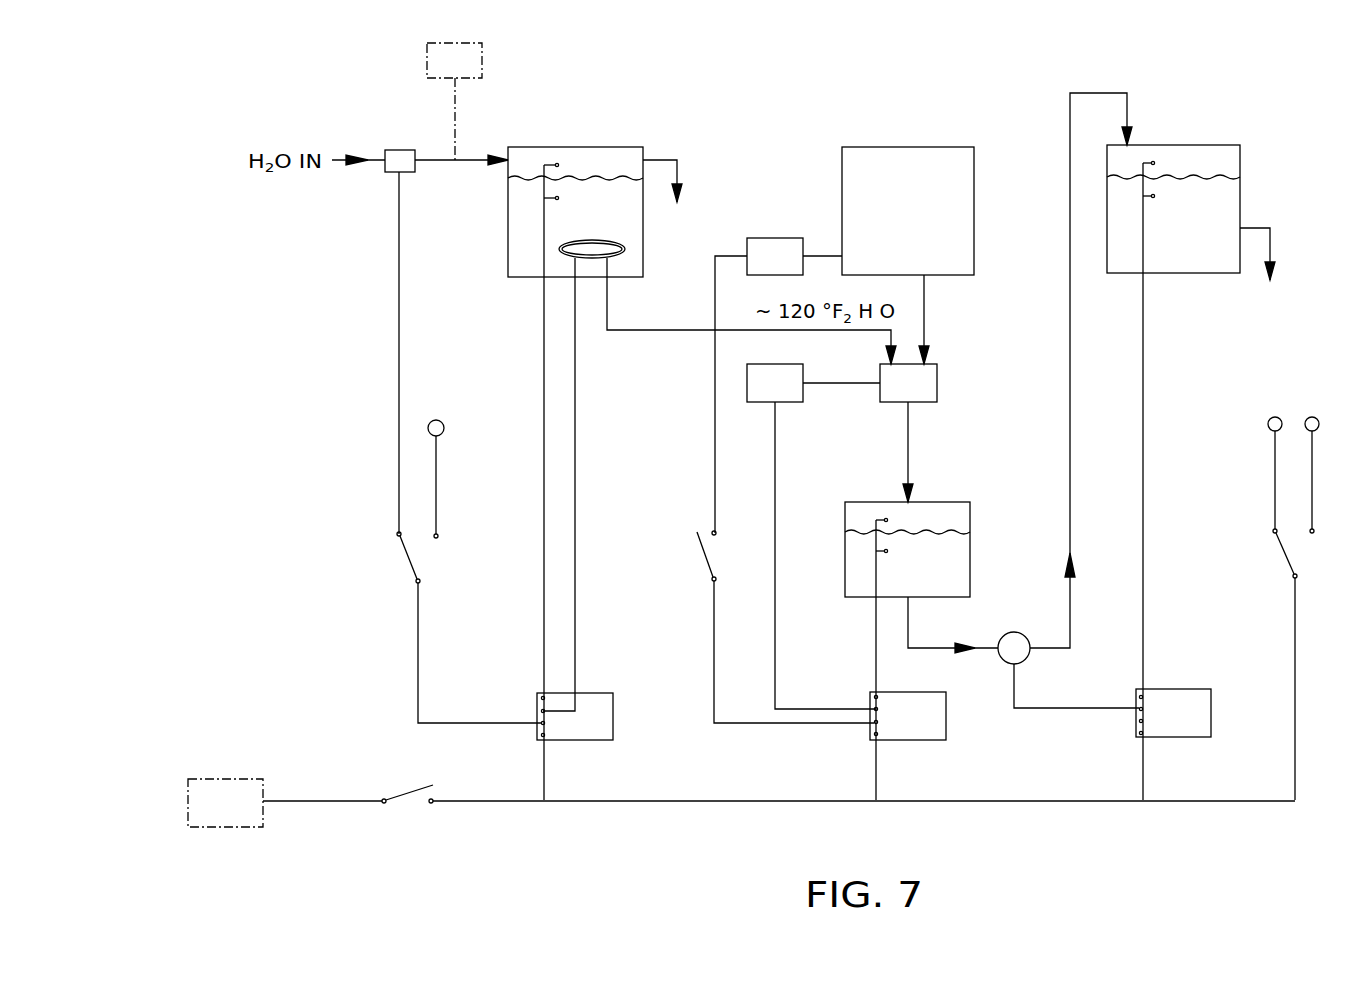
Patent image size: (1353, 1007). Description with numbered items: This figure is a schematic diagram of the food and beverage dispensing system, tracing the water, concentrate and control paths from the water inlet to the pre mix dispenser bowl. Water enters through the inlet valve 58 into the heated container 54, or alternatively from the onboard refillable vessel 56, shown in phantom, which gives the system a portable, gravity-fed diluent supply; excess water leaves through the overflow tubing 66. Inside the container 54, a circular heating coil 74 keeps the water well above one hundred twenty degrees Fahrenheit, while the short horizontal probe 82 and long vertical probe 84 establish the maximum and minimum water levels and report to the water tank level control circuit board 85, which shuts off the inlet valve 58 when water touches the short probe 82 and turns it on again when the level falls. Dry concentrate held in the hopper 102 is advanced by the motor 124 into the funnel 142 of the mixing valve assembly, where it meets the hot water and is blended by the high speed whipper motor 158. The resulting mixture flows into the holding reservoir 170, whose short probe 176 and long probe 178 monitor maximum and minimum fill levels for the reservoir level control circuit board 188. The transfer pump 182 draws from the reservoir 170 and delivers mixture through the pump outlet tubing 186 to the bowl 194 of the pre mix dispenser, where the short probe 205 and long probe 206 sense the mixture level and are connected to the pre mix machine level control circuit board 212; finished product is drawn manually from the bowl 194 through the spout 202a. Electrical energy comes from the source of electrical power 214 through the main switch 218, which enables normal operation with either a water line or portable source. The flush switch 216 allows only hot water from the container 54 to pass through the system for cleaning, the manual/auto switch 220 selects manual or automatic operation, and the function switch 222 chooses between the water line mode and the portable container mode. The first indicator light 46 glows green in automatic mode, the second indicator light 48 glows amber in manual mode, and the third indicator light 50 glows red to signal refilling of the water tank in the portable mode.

The first indicator light 46 is at (1313, 416).
The second indicator light 48 is at (1276, 416).
The third indicator light 50 is at (437, 420).
The container 54 is at (508, 237).
The refillable vessel 56 is at (482, 58).
The inlet valve 58 is at (400, 150).
The tubing 66 is at (682, 167).
The heating coil 74 is at (625, 242).
The short horizontal probe 82 is at (559, 166).
The long vertical probe 84 is at (559, 199).
The water tank level control circuit board 85 is at (613, 714).
The hopper 102 is at (905, 150).
The motor 124 is at (776, 240).
The funnel 142 is at (925, 402).
The whipper motor 158 is at (790, 402).
The holding reservoir 170 is at (970, 548).
The short probe 176 is at (888, 521).
The long probe 178 is at (888, 552).
The transfer pump 182 is at (1020, 634).
The pump outlet tubing 186 is at (1068, 372).
The reservoir level control circuit board 188 is at (946, 714).
The bowl 194 is at (1240, 206).
The spout 202a is at (1298, 234).
The short probe 205 is at (1155, 164).
The long probe 206 is at (1155, 197).
The pre mix machine level control circuit board 212 is at (1211, 714).
The source of electrical power 214 is at (236, 761).
The flush switch 216 is at (700, 558).
The main switch 218 is at (408, 787).
The manual/auto switch 220 is at (1282, 556).
The function switch 222 is at (402, 556).